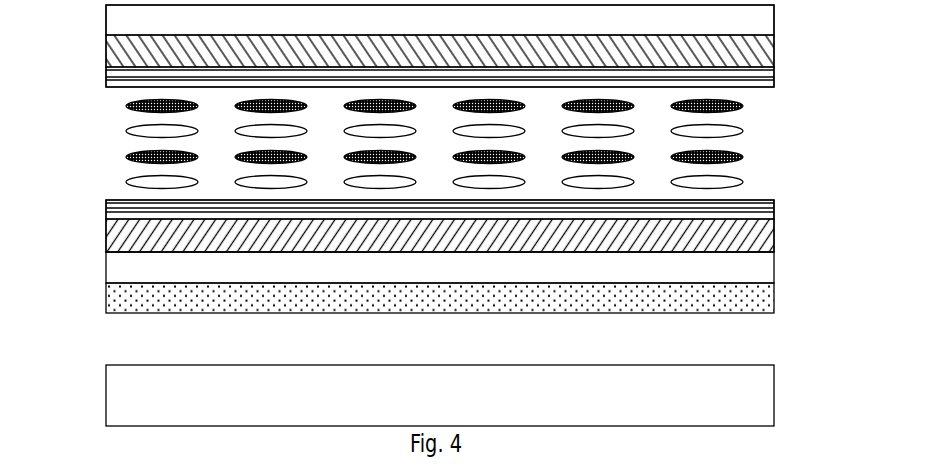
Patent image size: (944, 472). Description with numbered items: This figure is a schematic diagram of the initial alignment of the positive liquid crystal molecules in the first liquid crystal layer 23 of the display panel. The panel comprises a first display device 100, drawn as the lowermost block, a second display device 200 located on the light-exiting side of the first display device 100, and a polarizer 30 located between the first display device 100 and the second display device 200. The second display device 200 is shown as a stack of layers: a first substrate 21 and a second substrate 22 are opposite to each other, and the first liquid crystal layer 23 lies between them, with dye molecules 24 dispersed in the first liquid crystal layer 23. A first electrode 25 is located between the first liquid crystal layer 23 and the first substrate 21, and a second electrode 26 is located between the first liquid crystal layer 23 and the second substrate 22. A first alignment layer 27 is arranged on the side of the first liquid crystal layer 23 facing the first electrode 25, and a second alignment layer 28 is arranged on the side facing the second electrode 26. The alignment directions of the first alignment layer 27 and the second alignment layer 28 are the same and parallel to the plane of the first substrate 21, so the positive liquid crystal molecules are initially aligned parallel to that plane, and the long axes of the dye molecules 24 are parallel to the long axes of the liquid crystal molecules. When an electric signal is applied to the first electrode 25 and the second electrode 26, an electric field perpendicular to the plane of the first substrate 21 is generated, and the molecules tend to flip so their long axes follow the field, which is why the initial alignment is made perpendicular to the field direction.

The first substrate 21 is at (106, 267).
The second substrate 22 is at (106, 21).
The first liquid crystal layer 23 is at (126, 131).
The dye molecules 24 is at (127, 157).
The first electrode 25 is at (106, 237).
The second electrode 26 is at (106, 52).
The first alignment layer 27 is at (106, 210).
The second alignment layer 28 is at (106, 79).
The polarizer 30 is at (774, 298).
The first display device 100 is at (774, 396).
The second display device 200 is at (805, 49).